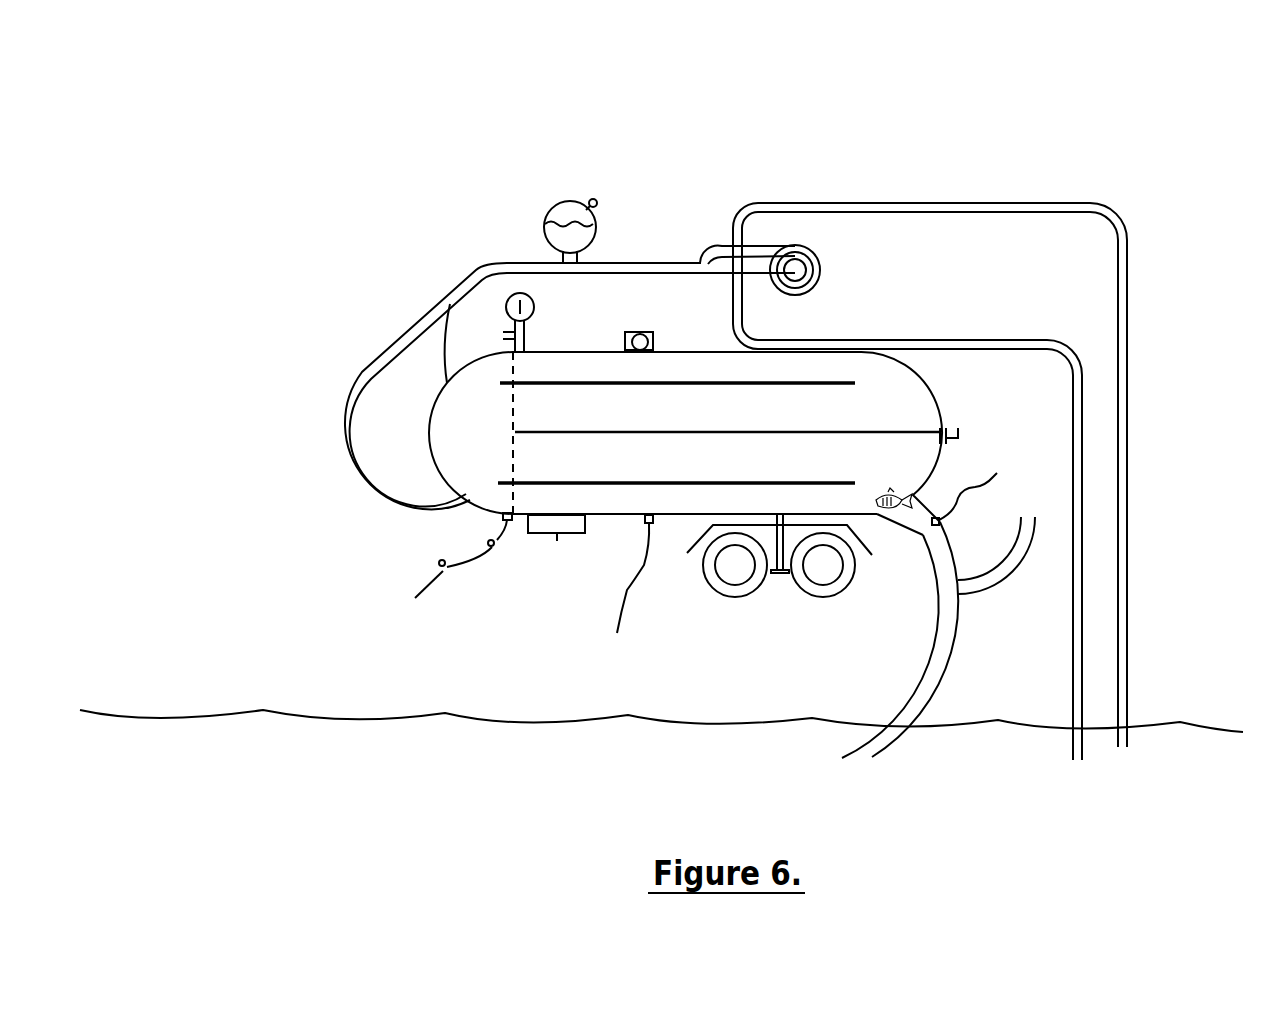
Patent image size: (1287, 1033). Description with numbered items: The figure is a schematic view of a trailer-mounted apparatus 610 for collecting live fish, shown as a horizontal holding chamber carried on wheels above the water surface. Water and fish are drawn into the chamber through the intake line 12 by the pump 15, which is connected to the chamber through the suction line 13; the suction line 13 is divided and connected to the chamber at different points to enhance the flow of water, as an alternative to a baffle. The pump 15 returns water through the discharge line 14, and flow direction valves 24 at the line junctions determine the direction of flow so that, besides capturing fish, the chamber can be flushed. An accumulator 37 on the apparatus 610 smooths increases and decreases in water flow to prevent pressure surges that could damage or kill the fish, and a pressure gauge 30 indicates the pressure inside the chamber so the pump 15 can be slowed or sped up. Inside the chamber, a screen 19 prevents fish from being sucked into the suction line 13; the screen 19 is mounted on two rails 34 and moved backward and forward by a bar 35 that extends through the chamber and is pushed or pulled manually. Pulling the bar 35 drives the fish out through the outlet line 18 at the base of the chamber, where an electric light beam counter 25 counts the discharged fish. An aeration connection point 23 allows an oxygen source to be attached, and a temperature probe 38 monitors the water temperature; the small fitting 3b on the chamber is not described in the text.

The intake line 12 is at (946, 667).
The suction line 13 is at (483, 275).
The discharge line 14 is at (789, 246).
The pump 15 is at (806, 272).
The outlet line 18 is at (1022, 548).
The screen 19 is at (513, 412).
The aeration connection point 23 is at (417, 593).
The flow direction valve 24 is at (733, 247).
The electric light beam counter 25 is at (987, 488).
The pressure gauge 30 is at (506, 310).
The rail 34 is at (850, 483).
The bar 35 is at (913, 436).
The accumulator 37 is at (546, 212).
The temperature probe 38 is at (615, 626).
The sensor 3b is at (642, 334).
The trailer-mounted apparatus 610 is at (1172, 156).